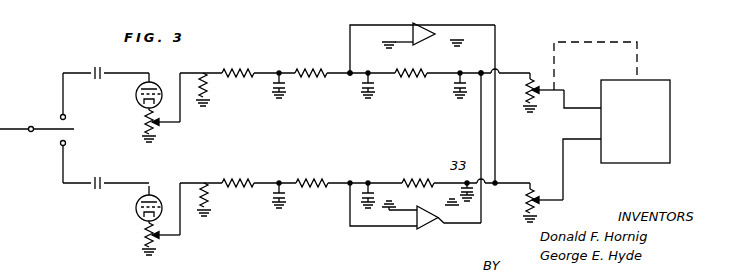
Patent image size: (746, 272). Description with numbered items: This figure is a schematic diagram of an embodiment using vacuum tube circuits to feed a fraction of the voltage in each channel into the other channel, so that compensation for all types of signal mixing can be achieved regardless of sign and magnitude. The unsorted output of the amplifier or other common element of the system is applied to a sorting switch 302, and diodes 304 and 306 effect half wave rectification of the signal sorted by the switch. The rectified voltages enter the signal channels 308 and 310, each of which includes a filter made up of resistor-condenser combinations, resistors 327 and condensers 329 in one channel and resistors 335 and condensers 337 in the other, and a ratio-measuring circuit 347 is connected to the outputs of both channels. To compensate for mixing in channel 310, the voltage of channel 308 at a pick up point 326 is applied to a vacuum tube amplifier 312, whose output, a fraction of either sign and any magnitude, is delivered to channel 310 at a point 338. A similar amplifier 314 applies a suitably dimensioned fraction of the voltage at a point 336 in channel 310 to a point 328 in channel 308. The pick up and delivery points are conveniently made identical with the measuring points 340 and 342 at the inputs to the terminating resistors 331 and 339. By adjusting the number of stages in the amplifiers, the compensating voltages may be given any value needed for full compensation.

The sorting switch 302 is at (45, 131).
The diode 304 is at (137, 94).
The diode 306 is at (137, 210).
The signal channel 308 is at (207, 82).
The signal channel 310 is at (208, 196).
The vacuum tube amplifier 312 is at (420, 23).
The amplifier 314 is at (420, 229).
The pick up point 326 is at (350, 78).
The resistor 327 is at (423, 62).
The delivery point 328 is at (472, 137).
The condenser 329 is at (451, 83).
The terminating resistor 331 is at (525, 89).
The resistor 335 is at (330, 172).
The pick up point 336 is at (351, 180).
The condenser 337 is at (462, 194).
The delivery point 338 is at (495, 185).
The terminating resistor 339 is at (527, 209).
The measuring point 340 is at (530, 72).
The measuring point 342 is at (534, 173).
The ratio-measuring circuit 347 is at (678, 110).